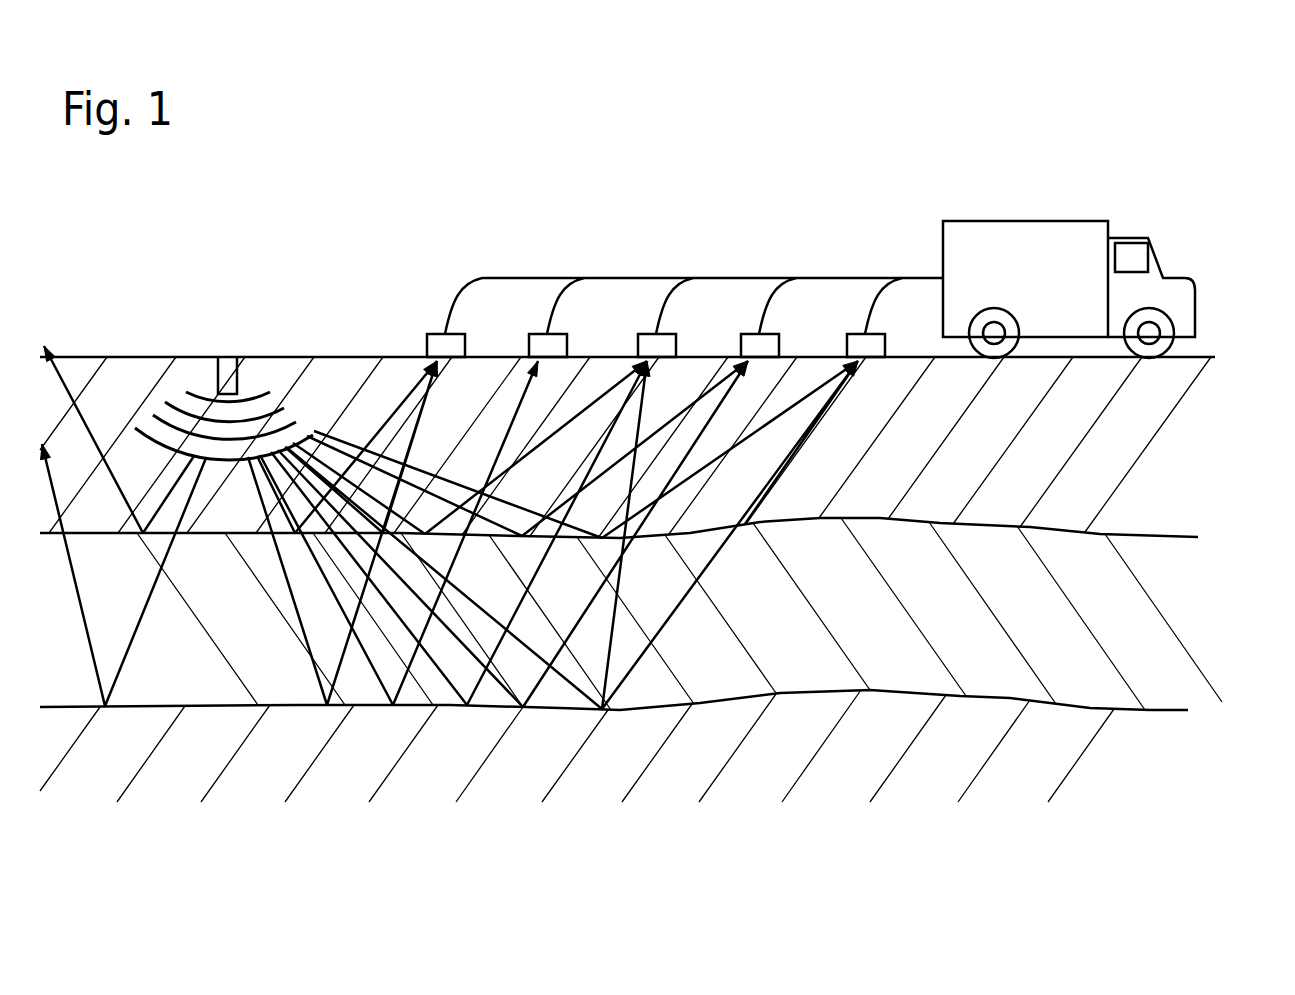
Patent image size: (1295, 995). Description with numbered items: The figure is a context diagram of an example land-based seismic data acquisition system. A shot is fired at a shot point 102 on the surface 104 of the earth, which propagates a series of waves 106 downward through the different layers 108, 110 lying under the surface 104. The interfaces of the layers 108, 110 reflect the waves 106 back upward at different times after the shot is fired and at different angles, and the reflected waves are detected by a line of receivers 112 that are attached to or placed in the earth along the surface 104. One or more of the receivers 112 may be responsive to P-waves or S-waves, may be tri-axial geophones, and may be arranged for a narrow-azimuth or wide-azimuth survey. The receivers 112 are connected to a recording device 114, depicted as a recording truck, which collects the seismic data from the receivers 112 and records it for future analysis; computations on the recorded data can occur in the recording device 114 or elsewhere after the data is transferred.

The shot point 102 is at (233, 240).
The surface 104 is at (1213, 357).
The waves 106 is at (122, 420).
The layer 108 is at (1198, 537).
The layer 110 is at (1188, 710).
The receivers 112 is at (678, 242).
The recording device 114 is at (1045, 172).